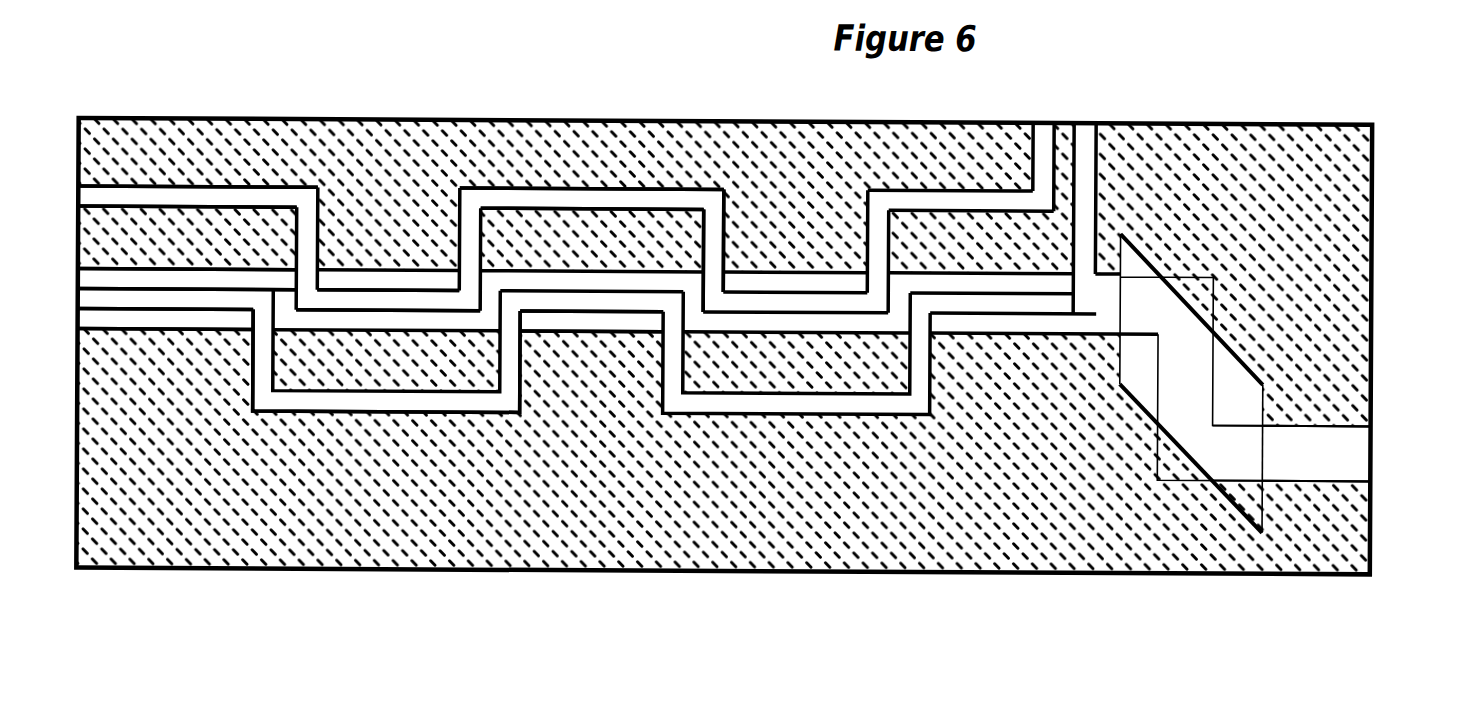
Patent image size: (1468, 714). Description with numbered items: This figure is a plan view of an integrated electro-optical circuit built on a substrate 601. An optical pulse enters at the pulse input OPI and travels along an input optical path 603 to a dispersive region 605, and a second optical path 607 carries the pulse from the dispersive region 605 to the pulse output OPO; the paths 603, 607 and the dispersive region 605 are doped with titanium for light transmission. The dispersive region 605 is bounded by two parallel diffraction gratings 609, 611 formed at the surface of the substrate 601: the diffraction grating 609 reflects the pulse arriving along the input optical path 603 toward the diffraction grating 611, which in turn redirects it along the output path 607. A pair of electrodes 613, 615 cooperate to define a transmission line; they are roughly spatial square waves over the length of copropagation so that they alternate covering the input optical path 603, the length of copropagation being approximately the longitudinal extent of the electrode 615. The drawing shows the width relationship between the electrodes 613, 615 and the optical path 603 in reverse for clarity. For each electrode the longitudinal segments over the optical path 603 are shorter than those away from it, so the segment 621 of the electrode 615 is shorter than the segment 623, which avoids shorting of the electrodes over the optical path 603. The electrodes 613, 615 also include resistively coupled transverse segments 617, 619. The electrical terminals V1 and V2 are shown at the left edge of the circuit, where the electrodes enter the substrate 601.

The substrate 601 is at (250, 119).
The input optical path 603 is at (603, 334).
The dispersive region 605 is at (1250, 367).
The second optical path 607 is at (1337, 480).
The diffraction grating 609 is at (1204, 316).
The diffraction grating 611 is at (1205, 465).
The electrode 613 is at (447, 414).
The electrode 615 is at (728, 212).
The transverse segment 617 is at (1098, 188).
The transverse segment 619 is at (1028, 140).
The segment 621 is at (420, 290).
The segment 623 is at (606, 188).
The first voltage terminal V1 is at (78, 313).
The second voltage terminal V2 is at (78, 192).
The pulse input OPI is at (78, 266).
The pulse output OPO is at (1371, 445).